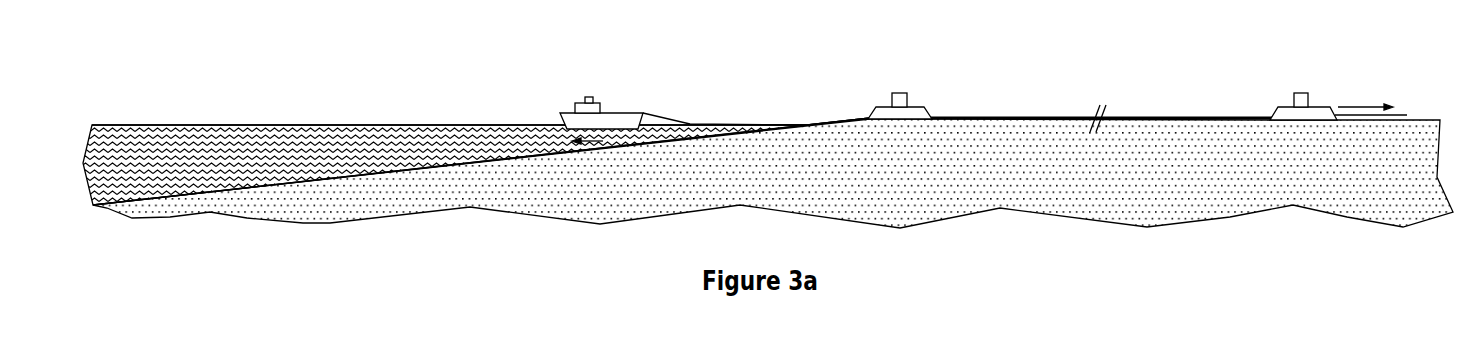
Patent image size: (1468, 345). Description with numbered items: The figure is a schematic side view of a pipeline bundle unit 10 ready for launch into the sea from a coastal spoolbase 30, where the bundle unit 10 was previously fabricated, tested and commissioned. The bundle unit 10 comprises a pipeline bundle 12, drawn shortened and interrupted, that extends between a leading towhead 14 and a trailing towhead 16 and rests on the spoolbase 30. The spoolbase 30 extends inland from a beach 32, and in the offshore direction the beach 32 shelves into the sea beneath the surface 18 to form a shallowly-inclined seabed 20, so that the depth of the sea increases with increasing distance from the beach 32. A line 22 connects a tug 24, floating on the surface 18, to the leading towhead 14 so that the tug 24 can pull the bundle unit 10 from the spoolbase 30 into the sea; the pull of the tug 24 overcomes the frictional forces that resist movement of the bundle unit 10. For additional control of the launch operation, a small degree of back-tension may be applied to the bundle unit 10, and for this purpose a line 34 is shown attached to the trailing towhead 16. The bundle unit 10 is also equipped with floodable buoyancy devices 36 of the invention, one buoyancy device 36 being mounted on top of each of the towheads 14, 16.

The bundle unit 10 is at (1124, 99).
The pipeline bundle 12 is at (1000, 115).
The leading towhead 14 is at (885, 110).
The trailing towhead 16 is at (1313, 113).
The surface 18 is at (203, 130).
The seabed 20 is at (182, 195).
The line 22 is at (668, 121).
The tug 24 is at (583, 107).
The coastal spoolbase 30 is at (1177, 143).
The beach 32 is at (853, 125).
The line 34 is at (1355, 115).
The floodable buoyancy device 36 is at (900, 97).